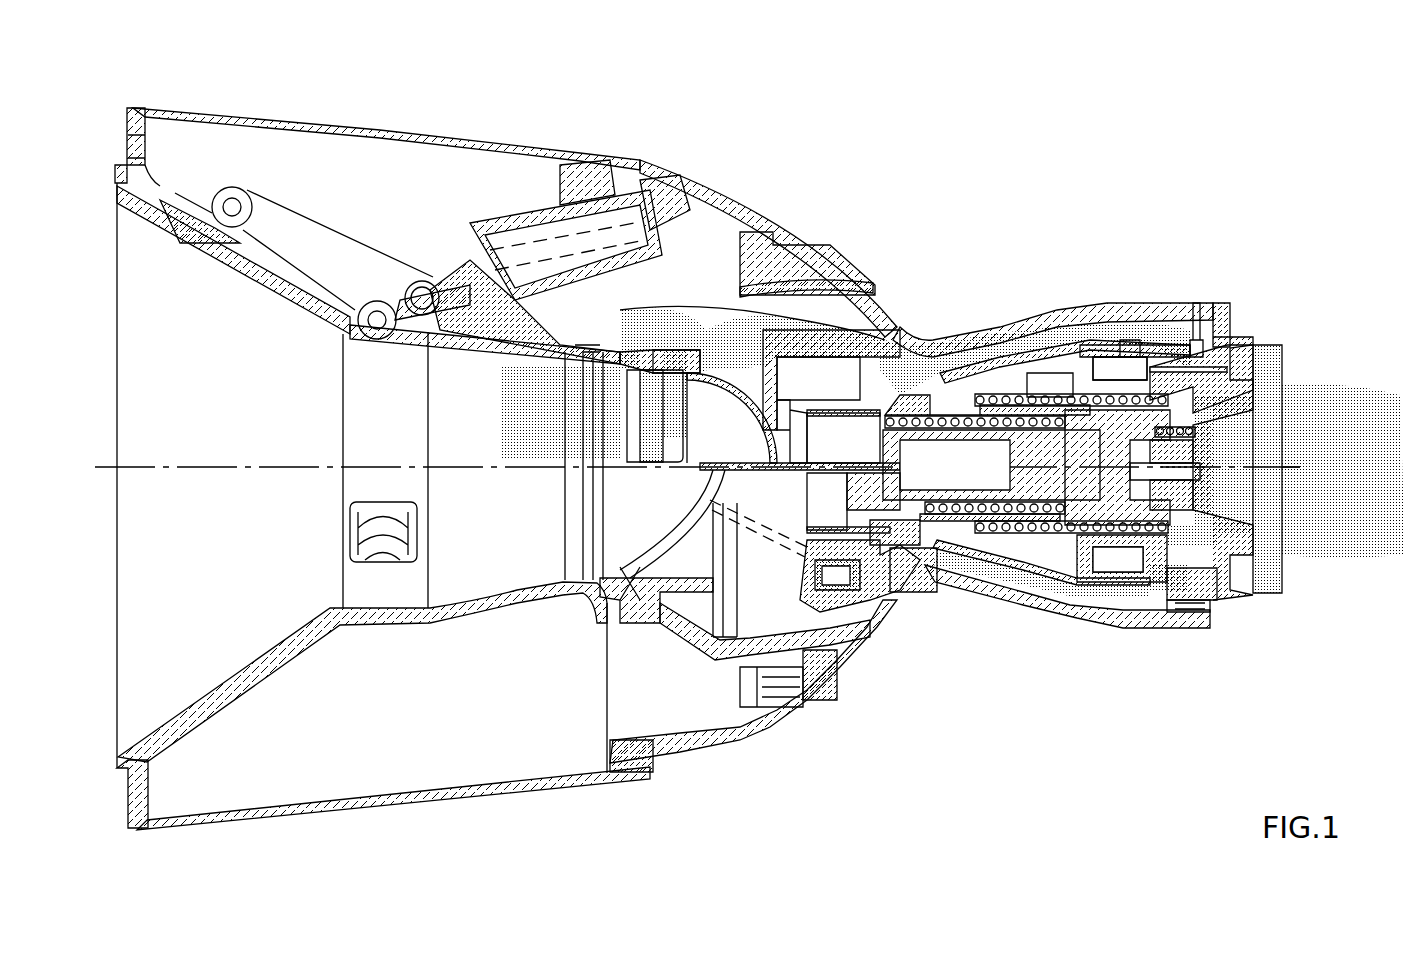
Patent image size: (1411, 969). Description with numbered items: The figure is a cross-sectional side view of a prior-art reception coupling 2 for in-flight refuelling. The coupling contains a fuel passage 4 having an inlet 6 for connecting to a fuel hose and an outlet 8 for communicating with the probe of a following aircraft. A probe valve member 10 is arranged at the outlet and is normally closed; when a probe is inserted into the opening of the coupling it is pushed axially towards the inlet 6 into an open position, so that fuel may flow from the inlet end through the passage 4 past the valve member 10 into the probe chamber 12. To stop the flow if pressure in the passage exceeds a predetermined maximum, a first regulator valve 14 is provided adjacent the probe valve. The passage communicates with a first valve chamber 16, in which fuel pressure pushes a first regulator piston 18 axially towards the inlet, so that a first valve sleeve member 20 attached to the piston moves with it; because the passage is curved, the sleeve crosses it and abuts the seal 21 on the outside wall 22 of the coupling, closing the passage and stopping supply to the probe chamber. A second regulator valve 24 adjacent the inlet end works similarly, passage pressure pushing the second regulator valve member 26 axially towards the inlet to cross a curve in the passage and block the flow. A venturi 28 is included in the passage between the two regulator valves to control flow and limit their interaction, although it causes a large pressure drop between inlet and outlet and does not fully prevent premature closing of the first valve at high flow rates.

The reception coupling 2 is at (700, 127).
The fuel passage 4 is at (958, 330).
The inlet 6 is at (1285, 354).
The outlet 8 is at (562, 516).
The probe valve member 10 is at (706, 350).
The probe chamber 12 is at (470, 440).
The first regulator valve 14 is at (803, 600).
The first valve chamber 16 is at (867, 490).
The first regulator piston 18 is at (1005, 490).
The first valve sleeve member 20 is at (887, 543).
The seal 21 is at (897, 327).
The outside wall 22 is at (1035, 325).
The second regulator valve 24 is at (1137, 353).
The second regulator valve member 26 is at (1137, 583).
The venturi 28 is at (1067, 602).